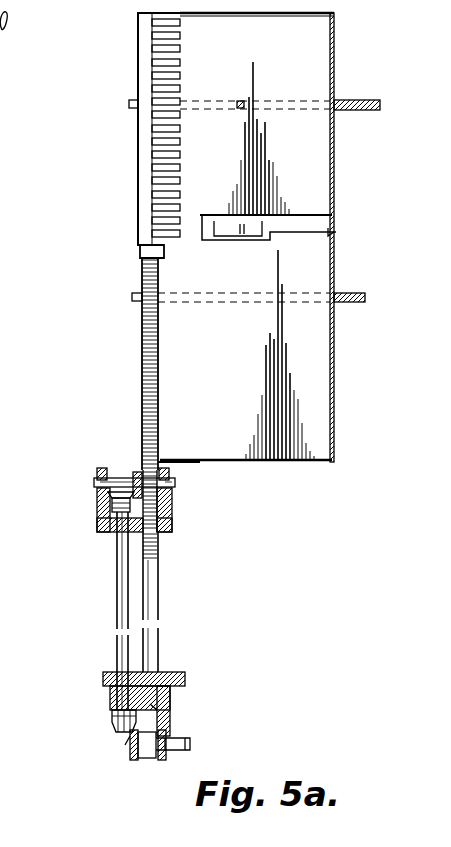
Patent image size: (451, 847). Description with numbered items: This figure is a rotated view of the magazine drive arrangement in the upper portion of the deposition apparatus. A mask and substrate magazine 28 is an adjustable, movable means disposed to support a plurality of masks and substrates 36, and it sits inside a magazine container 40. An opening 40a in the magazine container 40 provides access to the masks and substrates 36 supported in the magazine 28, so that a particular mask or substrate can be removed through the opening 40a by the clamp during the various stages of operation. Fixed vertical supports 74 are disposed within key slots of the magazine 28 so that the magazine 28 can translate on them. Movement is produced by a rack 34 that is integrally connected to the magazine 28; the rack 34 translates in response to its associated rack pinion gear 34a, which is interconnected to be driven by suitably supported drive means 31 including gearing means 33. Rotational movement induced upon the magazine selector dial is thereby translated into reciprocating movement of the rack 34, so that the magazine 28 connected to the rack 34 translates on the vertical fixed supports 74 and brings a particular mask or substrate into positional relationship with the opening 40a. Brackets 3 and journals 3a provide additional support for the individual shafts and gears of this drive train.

The magazine container 40 is at (340, 30).
The opening 40a is at (335, 218).
The masks and substrates 36 is at (336, 234).
The mask and substrate magazine 28 is at (137, 165).
The rack 34 is at (160, 382).
The rack pinion gear 34a is at (158, 466).
The bracket 3 is at (97, 521).
The journal 3a is at (94, 482).
The gearing means 33 is at (138, 470).
The drive means 31 is at (117, 580).
The fixed vertical supports 74 is at (158, 576).